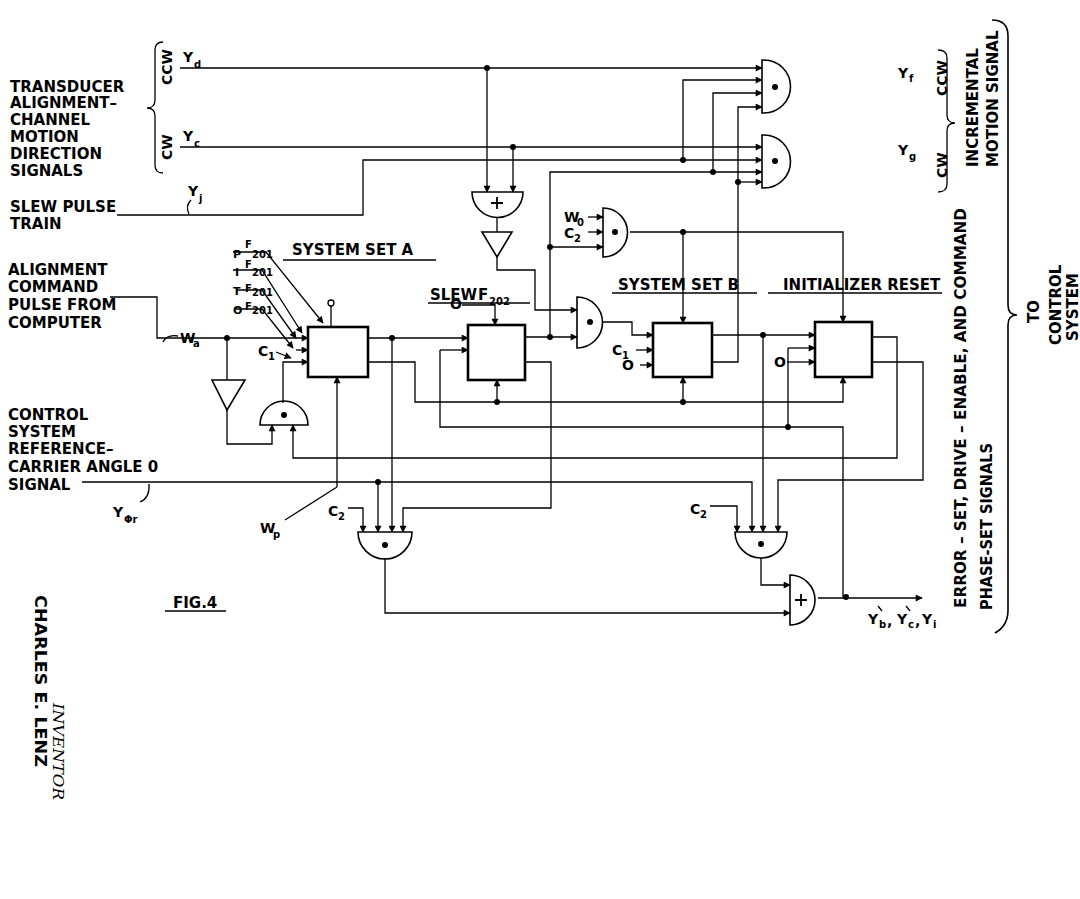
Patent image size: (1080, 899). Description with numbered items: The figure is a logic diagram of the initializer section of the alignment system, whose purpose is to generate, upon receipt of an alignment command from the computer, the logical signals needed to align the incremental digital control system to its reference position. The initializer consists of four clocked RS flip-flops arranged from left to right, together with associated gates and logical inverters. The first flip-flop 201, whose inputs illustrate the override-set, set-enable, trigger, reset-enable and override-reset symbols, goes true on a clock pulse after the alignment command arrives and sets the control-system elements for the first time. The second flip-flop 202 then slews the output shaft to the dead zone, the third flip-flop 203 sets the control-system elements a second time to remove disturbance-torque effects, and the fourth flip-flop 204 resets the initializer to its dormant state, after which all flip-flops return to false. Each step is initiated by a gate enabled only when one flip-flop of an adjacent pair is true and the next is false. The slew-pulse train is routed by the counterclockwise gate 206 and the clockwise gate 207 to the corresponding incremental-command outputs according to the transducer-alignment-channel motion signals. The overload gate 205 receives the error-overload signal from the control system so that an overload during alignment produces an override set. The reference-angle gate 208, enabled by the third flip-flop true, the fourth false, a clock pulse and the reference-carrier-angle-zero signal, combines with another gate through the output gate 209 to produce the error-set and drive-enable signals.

The flip-flop F201 201 is at (403, 443).
The flip-flop F202 202 is at (441, 399).
The flip-flop F203 203 is at (575, 281).
The flip-flop F204 204 is at (716, 337).
The gate G205 205 is at (634, 232).
The gate G206 206 is at (797, 86).
The gate G207 207 is at (797, 161).
The gate G208 208 is at (752, 554).
The gate G209 209 is at (819, 606).